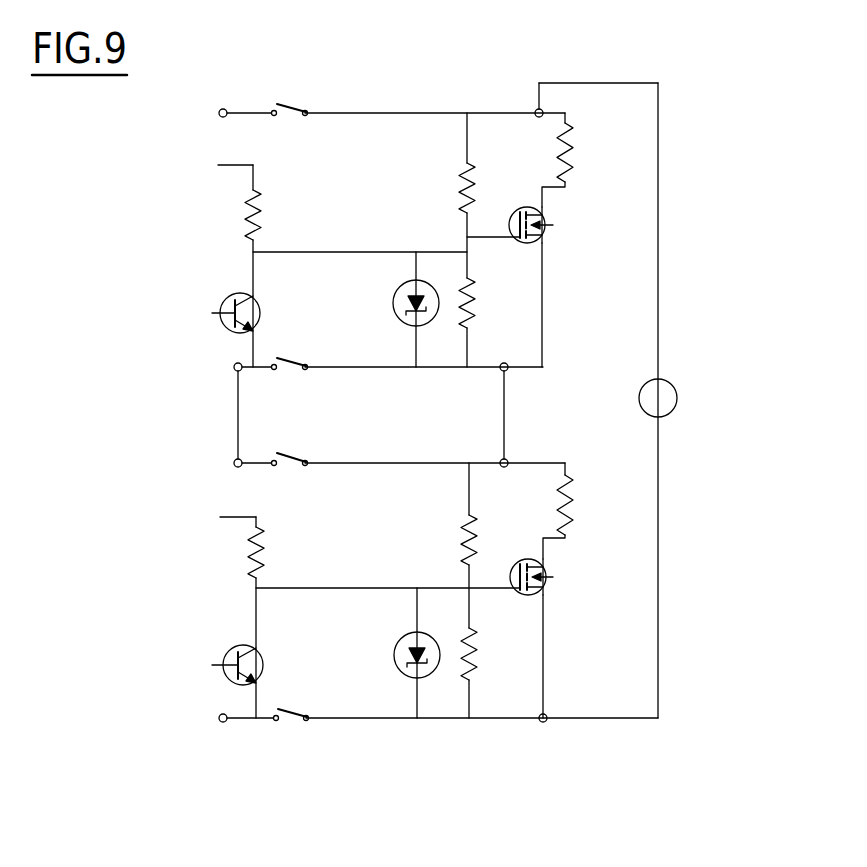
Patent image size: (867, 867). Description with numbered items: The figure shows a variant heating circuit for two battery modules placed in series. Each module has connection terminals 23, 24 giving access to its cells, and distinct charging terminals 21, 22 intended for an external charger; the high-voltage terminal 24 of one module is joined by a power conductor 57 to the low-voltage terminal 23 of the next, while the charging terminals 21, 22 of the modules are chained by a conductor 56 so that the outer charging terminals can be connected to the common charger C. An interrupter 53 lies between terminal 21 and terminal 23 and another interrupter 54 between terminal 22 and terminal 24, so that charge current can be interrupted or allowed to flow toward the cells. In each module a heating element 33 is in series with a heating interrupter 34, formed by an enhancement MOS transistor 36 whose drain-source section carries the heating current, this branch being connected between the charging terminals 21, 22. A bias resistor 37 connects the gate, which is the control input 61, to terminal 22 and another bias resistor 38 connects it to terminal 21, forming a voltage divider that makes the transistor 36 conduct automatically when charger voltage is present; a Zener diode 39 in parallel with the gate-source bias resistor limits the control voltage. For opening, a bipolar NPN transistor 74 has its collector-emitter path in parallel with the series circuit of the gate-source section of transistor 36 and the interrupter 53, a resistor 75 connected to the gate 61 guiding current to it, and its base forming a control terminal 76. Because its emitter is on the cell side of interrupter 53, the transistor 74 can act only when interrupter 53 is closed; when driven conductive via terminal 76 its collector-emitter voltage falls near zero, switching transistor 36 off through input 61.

The charging terminal 21 is at (510, 372).
The charging terminal 22 is at (536, 111).
The connection terminal 23 is at (233, 365).
The connection terminal 24 is at (220, 109).
The heating element 33 is at (574, 160).
The heating interrupter 34 is at (575, 462).
The enhancement MOS transistor 36 is at (545, 240).
The bias resistor 37 is at (460, 185).
The bias resistor 38 is at (473, 325).
The Zener diode 39 is at (393, 300).
The interrupter 53 is at (292, 363).
The interrupter 54 is at (290, 117).
The conductor 56 is at (500, 420).
The power conductor 57 is at (241, 408).
The control input 61 is at (490, 241).
The interrupter 74 is at (240, 294).
The resistor 75 is at (262, 215).
The control terminal 76 is at (215, 313).
The common charger C is at (680, 400).